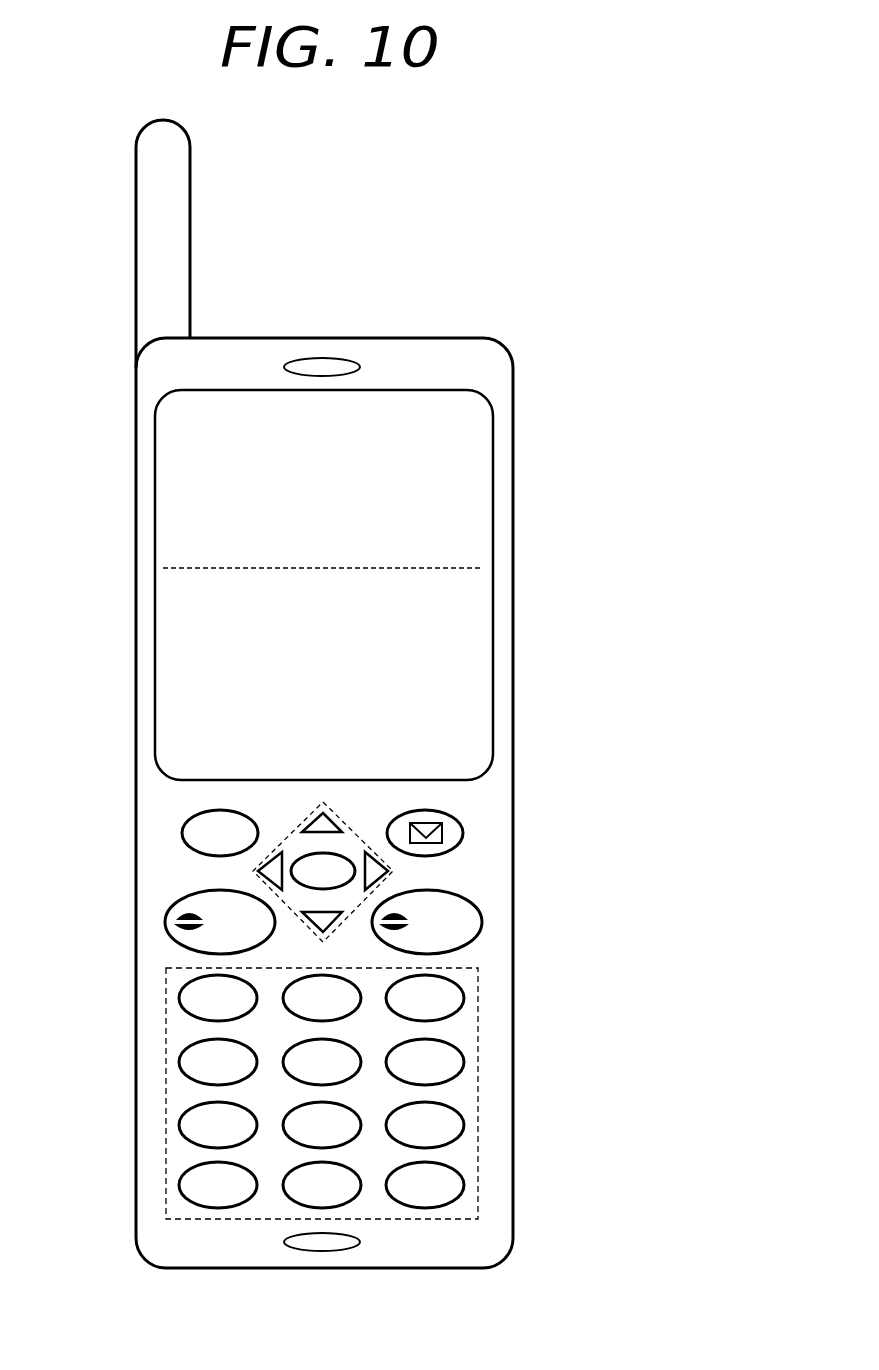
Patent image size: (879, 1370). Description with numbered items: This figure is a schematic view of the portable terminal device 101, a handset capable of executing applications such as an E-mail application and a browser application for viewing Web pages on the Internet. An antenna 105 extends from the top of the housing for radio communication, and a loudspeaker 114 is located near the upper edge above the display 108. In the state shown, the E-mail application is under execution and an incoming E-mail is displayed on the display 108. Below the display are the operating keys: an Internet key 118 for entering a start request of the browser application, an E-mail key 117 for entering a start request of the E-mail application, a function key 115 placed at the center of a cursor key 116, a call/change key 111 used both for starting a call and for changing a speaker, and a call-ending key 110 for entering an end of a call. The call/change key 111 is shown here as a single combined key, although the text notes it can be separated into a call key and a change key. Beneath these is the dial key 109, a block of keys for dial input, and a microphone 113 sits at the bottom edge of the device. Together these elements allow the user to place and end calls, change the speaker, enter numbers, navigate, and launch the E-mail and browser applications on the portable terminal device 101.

The portable terminal device 101 is at (434, 338).
The antenna 105 is at (192, 206).
The display 108 is at (494, 463).
The dial key 109 is at (455, 993).
The call-ending key 110 is at (471, 918).
The call/change key 111 is at (168, 910).
The microphone 113 is at (312, 1251).
The loudspeaker 114 is at (336, 358).
The function key 115 is at (290, 871).
The cursor key 116 is at (356, 871).
The E-mail key 117 is at (464, 830).
The Internet key 118 is at (182, 831).